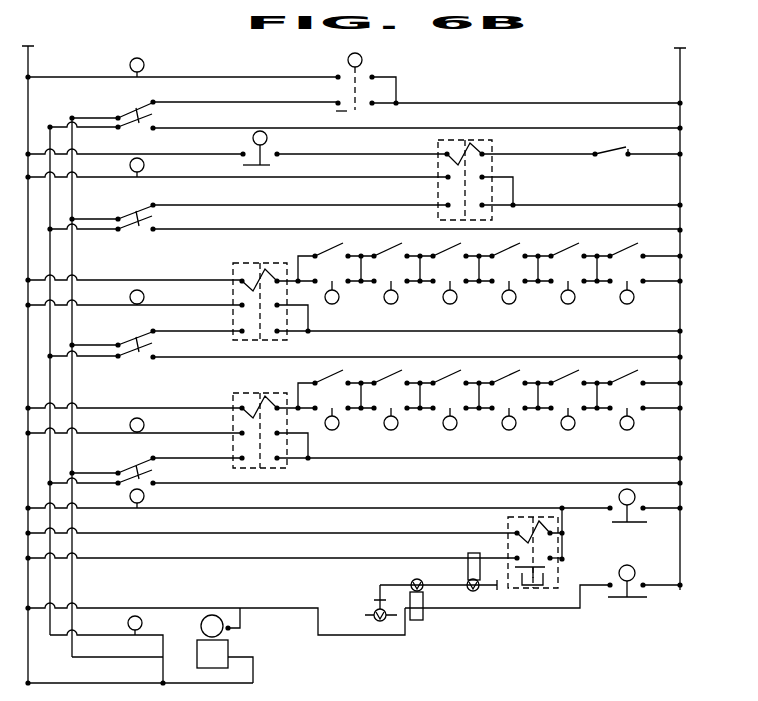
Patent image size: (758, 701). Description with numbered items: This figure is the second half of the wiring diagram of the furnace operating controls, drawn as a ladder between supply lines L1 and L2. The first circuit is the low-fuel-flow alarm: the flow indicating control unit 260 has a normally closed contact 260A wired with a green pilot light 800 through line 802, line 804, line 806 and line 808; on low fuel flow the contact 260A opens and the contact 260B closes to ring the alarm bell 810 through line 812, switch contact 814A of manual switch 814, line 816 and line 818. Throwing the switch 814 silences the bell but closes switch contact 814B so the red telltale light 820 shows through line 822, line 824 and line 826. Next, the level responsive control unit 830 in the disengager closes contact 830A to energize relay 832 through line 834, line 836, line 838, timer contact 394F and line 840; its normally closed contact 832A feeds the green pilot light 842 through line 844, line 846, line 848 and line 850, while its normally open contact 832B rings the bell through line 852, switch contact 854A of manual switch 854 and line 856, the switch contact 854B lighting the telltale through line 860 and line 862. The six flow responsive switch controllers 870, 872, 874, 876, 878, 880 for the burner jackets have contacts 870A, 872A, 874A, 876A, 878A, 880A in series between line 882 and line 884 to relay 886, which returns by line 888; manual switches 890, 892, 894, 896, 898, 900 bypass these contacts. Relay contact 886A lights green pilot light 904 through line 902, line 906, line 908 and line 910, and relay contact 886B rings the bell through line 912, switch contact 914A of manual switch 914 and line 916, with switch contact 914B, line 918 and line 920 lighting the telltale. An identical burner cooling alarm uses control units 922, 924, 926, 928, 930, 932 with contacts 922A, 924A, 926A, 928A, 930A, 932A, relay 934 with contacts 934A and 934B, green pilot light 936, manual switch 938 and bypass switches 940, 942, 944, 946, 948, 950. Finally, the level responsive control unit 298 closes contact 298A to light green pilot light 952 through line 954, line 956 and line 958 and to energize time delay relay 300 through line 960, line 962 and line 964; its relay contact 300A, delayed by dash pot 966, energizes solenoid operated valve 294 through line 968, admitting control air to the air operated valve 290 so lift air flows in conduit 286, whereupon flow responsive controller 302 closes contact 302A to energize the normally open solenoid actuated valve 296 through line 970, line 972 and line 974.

The line L1 is at (28, 58).
The line L2 is at (680, 66).
The flow indicating control unit 260 is at (362, 60).
The normally closed contact 260A is at (364, 72).
The contact 260B is at (358, 113).
The conduit 286 is at (365, 613).
The air operated valve 290 is at (374, 600).
The solenoid operated valve 294 is at (473, 592).
The normally open solenoid actuated valve 296 is at (414, 580).
The level responsive control unit 298 is at (618, 497).
The contact 298A is at (630, 523).
The time delay relay 300 is at (508, 530).
The relay contact 300A is at (558, 570).
The flow responsive controller 302 is at (627, 565).
The contact 302A is at (630, 598).
The timer contact 394F is at (661, 160).
The green pilot light 800 is at (144, 61).
The line 802 is at (62, 77).
The line 804 is at (228, 77).
The line 806 is at (396, 90).
The line 808 is at (508, 103).
The alarm bell 810 is at (232, 650).
The line 812 is at (225, 102).
The manual switch 814 is at (160, 115).
The switch contact 814A is at (134, 110).
The switch contact 814B is at (160, 128).
The line 816 is at (84, 117).
The line 818 is at (98, 683).
The red telltale light 820 is at (143, 623).
The line 822 is at (532, 128).
The line 824 is at (85, 127).
The line 826 is at (163, 647).
The level responsive control unit 830 is at (267, 136).
The contact 830A is at (270, 168).
The relay 832 is at (492, 151).
The normally closed contact 832A is at (448, 176).
The normally open contact 832B is at (448, 204).
The line 834 is at (243, 158).
The line 836 is at (362, 154).
The line 838 is at (585, 153).
The line 840 is at (668, 186).
The green pilot light 842 is at (144, 166).
The line 844 is at (100, 168).
The line 846 is at (282, 190).
The line 848 is at (513, 184).
The line 850 is at (585, 205).
The line 852 is at (303, 205).
The manual switch 854 is at (160, 217).
The switch contact 854A is at (154, 204).
The switch contact 854B is at (155, 232).
The line 856 is at (98, 217).
The line 860 is at (280, 229).
The line 862 is at (85, 232).
The flow responsive switch controller 870 is at (339, 297).
The contact 870A is at (330, 283).
The flow responsive switch controller 872 is at (398, 297).
The contact 872A is at (389, 283).
The flow responsive switch controller 874 is at (457, 297).
The contact 874A is at (448, 283).
The flow responsive switch controller 876 is at (516, 297).
The contact 876A is at (507, 283).
The flow responsive switch controller 878 is at (575, 297).
The contact 878A is at (566, 283).
The flow responsive switch controller 880 is at (634, 297).
The contact 880A is at (625, 283).
The line 882 is at (680, 283).
The line 884 is at (290, 264).
The relay 886 is at (232, 277).
The relay contact 886A is at (242, 305).
The relay contact 886B is at (242, 331).
The line 888 is at (128, 280).
The manual switch 890 is at (340, 244).
The manual switch 892 is at (399, 244).
The manual switch 894 is at (458, 244).
The manual switch 896 is at (517, 244).
The manual switch 898 is at (576, 244).
The manual switch 900 is at (635, 244).
The line 902 is at (95, 294).
The green pilot light 904 is at (130, 297).
The line 906 is at (166, 294).
The line 908 is at (308, 316).
The line 910 is at (400, 332).
The line 912 is at (172, 331).
The manual switch 914 is at (145, 331).
The switch contact 914A is at (132, 340).
The switch contact 914B is at (156, 358).
The line 916 is at (96, 356).
The line 918 is at (508, 357).
The line 920 is at (82, 360).
The flow responsive control unit 922 is at (339, 423).
The contact 922A is at (330, 410).
The flow responsive control unit 924 is at (398, 423).
The contact 924A is at (389, 410).
The flow responsive control unit 926 is at (457, 423).
The contact 926A is at (448, 410).
The flow responsive control unit 928 is at (516, 423).
The contact 928A is at (507, 410).
The flow responsive control unit 930 is at (575, 423).
The contact 930A is at (566, 410).
The flow responsive control unit 932 is at (634, 423).
The contact 932A is at (625, 410).
The relay 934 is at (232, 406).
The relay contact 934A is at (242, 433).
The relay contact 934B is at (242, 458).
The green pilot light 936 is at (130, 426).
The manual switch 938 is at (122, 465).
The manual switch 940 is at (340, 371).
The manual switch 942 is at (399, 371).
The manual switch 944 is at (458, 371).
The manual switch 946 is at (517, 371).
The manual switch 948 is at (576, 371).
The manual switch 950 is at (635, 371).
The green pilot light 952 is at (144, 495).
The line 954 is at (93, 510).
The line 956 is at (332, 508).
The line 958 is at (667, 508).
The line 960 is at (248, 532).
The line 962 is at (562, 540).
The line 964 is at (562, 524).
The dash pot 966 is at (546, 586).
The line 968 is at (185, 558).
The line 970 is at (205, 608).
The line 972 is at (498, 610).
The line 974 is at (680, 587).